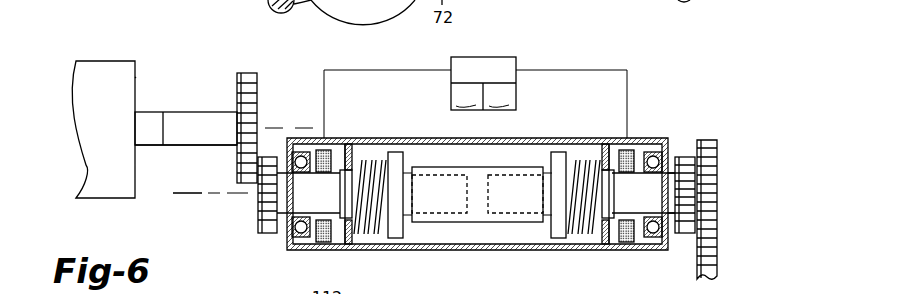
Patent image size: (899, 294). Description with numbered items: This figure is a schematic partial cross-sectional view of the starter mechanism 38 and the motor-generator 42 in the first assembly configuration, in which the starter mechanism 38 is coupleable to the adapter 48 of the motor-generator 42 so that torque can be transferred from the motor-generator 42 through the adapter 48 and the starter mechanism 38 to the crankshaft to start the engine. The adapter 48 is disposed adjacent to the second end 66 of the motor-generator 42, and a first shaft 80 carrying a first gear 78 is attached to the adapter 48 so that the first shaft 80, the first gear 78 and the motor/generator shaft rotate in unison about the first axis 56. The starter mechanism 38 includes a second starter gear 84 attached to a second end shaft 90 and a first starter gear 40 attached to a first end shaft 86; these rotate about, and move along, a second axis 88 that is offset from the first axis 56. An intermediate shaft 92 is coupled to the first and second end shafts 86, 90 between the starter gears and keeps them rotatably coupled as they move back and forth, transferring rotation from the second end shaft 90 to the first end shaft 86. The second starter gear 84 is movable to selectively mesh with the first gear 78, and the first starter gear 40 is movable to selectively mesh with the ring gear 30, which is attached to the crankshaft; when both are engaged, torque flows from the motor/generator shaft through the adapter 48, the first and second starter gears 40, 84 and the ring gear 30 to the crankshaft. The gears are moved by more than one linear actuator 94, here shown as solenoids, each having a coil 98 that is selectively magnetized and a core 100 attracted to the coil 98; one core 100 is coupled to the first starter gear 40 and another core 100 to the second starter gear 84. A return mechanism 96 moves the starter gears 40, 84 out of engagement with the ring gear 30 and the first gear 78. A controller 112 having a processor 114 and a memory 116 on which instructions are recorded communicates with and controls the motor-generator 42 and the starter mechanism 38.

The ring gear 30 is at (717, 265).
The starter mechanism 38 is at (703, 69).
The first starter gear 40 is at (684, 234).
The motor-generator 42 is at (102, 70).
The adapter 48 is at (146, 133).
The first axis 56 is at (290, 128).
The second end 66 is at (135, 77).
The first gear 78 is at (237, 80).
The first shaft 80 is at (204, 125).
The second starter gear 84 is at (258, 218).
The first end shaft 86 is at (670, 185).
The second axis 88 is at (190, 198).
The second end shaft 90 is at (285, 213).
The intermediate shaft 92 is at (450, 166).
The linear actuator 94 is at (351, 129).
The return mechanism 96 is at (372, 239).
The coil 98 is at (326, 149).
The core 100 is at (347, 197).
The controller 112 is at (496, 57).
The processor 114 is at (467, 99).
The memory 116 is at (500, 99).